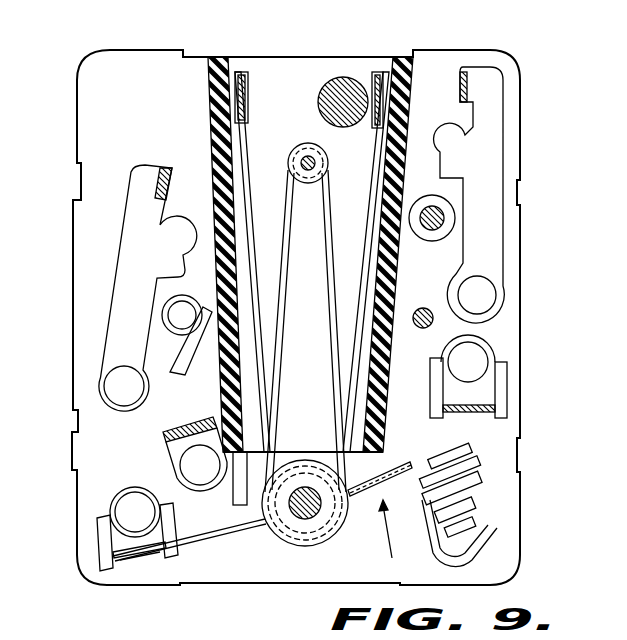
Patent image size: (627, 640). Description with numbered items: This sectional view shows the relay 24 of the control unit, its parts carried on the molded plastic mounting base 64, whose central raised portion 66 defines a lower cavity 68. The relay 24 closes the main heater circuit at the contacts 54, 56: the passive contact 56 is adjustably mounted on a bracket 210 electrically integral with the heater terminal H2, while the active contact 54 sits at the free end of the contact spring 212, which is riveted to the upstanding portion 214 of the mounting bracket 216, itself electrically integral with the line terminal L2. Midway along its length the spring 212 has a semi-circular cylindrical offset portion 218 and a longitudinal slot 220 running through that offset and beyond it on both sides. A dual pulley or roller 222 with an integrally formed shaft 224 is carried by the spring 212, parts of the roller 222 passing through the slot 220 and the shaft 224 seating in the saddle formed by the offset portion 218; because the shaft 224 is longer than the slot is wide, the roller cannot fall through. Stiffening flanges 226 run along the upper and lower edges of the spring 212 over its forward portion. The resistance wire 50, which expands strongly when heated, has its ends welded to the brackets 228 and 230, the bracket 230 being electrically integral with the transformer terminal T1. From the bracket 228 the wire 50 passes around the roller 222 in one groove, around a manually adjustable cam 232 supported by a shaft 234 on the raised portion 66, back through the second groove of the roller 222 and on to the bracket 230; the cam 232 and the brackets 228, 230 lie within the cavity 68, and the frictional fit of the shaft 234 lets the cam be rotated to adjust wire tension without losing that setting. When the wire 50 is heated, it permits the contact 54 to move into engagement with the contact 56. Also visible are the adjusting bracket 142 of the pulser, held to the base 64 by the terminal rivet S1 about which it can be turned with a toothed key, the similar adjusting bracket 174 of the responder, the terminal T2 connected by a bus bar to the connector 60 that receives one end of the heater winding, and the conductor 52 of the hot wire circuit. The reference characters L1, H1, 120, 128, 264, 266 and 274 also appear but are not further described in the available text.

The mounting base 64 is at (140, 64).
The lower cavity 68 is at (232, 60).
The central raised portion 66 is at (405, 62).
The bracket 228 is at (249, 85).
The bracket 230 is at (378, 72).
The transformer terminal T1 is at (338, 78).
The manually adjustable cam 232 is at (290, 153).
The shaft 234 is at (318, 168).
The resistance wire 50 is at (252, 270).
The adjusting bracket 174 is at (117, 273).
The terminal T2 is at (113, 390).
The conductor 52 is at (181, 322).
The adjusting bracket 142 is at (482, 220).
The connector 60 is at (425, 308).
The terminal rivet S1 is at (487, 297).
The latch post L1 is at (468, 362).
The latch bracket 120 is at (490, 392).
The hinge post H1 is at (185, 466).
The hinge bracket 128 is at (170, 455).
The offset portion 218 is at (305, 478).
The longitudinal slot 220 is at (270, 545).
The dual pulley or roller 222 is at (322, 548).
The shaft 224 is at (316, 540).
The stiffening flanges 226 is at (385, 468).
The active contact 54 is at (470, 457).
The passive contact 56 is at (472, 474).
The bracket 210 is at (495, 535).
The heater terminal H2 is at (465, 556).
The line terminal L2 is at (120, 510).
The mounting bracket 216 is at (120, 540).
The contact spring 212 is at (200, 545).
The upstanding portion 214 is at (145, 558).
The relay 24 is at (398, 542).
The connector 266 is at (142, 631).
The connector 274 is at (187, 631).
The connector 264 is at (241, 631).